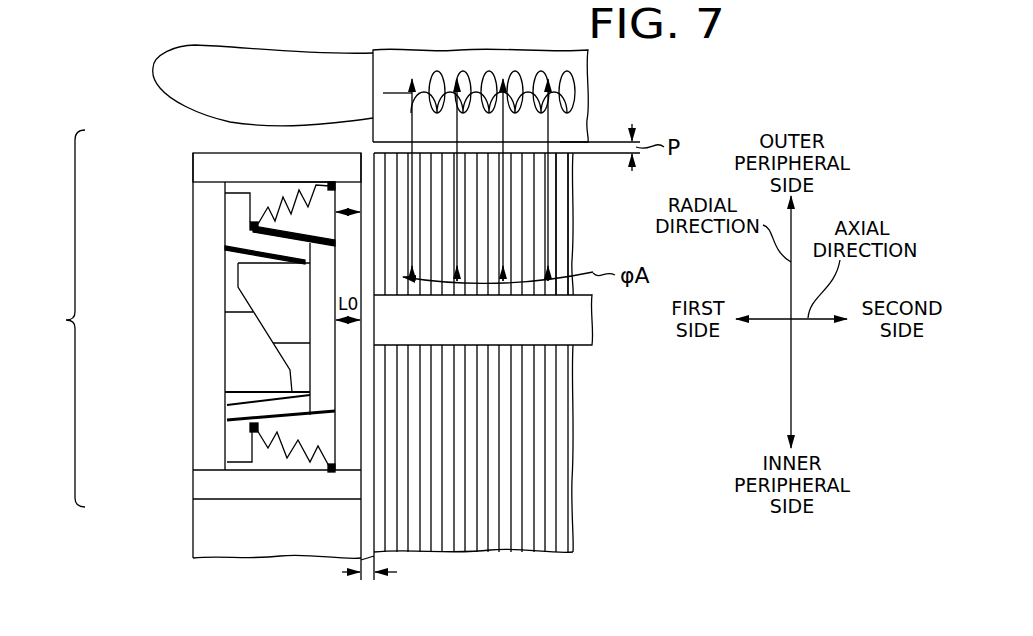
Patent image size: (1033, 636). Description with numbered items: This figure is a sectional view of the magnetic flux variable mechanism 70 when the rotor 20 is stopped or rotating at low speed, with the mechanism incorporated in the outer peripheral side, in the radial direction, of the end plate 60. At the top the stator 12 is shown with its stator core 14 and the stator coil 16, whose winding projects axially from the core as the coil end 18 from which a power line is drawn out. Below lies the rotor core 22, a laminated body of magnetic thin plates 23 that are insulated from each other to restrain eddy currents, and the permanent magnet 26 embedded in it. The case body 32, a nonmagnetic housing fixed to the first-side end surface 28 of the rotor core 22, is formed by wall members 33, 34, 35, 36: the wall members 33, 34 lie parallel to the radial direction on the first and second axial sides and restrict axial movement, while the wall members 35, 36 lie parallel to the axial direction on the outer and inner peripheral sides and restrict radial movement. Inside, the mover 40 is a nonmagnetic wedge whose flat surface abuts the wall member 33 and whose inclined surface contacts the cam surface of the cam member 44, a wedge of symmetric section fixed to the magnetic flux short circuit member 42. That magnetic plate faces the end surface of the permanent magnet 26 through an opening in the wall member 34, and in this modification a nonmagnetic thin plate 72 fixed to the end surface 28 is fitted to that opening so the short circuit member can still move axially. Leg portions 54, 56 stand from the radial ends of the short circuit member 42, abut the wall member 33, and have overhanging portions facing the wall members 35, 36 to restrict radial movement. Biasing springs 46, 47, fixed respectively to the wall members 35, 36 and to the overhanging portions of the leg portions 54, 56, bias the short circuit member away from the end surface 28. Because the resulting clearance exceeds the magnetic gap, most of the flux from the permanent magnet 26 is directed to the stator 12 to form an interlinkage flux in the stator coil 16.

The stator 12 is at (601, 83).
The stator core 14 is at (440, 63).
The stator coil 16 is at (500, 63).
The coil end 18 is at (248, 78).
The rotor 20 is at (588, 453).
The rotor core 22 is at (576, 200).
The magnetic thin plates 23 is at (566, 240).
The permanent magnet 26 is at (576, 317).
The end surface 28 is at (366, 522).
The case body 32 is at (213, 155).
The wall member 33 is at (203, 321).
The wall member 34 is at (352, 205).
The wall member 35 is at (308, 168).
The wall member 36 is at (283, 493).
The mover 40 is at (240, 348).
The magnetic flux short circuit member 42 is at (320, 395).
The cam member 44 is at (270, 285).
The biasing spring 46 is at (287, 190).
The biasing spring 47 is at (280, 450).
The leg portion 54 is at (240, 232).
The leg portion 56 is at (237, 445).
The end plate 60 is at (205, 522).
The magnetic flux variable mechanism 70 is at (197, 318).
The nonmagnetic thin plate 72 is at (290, 360).